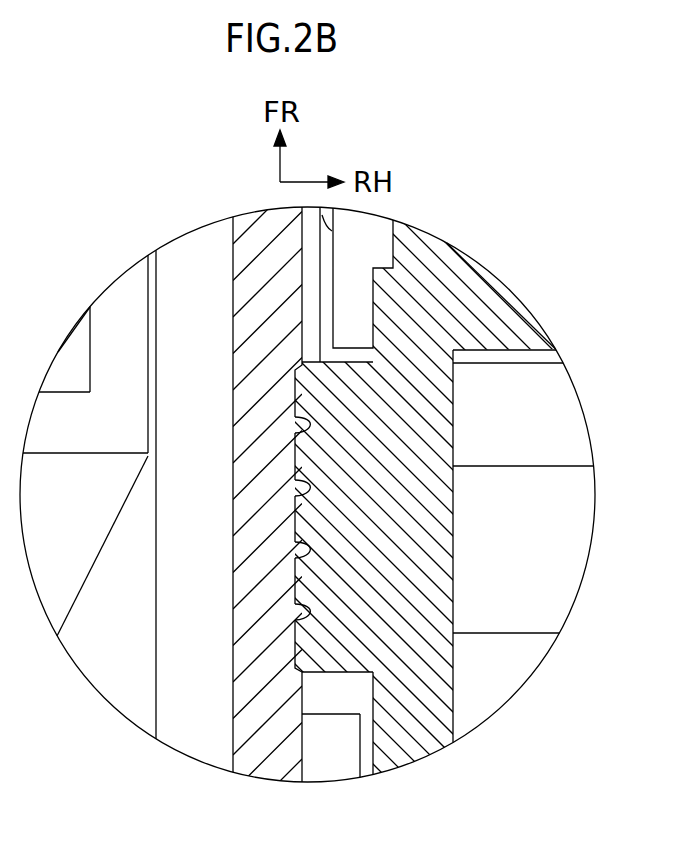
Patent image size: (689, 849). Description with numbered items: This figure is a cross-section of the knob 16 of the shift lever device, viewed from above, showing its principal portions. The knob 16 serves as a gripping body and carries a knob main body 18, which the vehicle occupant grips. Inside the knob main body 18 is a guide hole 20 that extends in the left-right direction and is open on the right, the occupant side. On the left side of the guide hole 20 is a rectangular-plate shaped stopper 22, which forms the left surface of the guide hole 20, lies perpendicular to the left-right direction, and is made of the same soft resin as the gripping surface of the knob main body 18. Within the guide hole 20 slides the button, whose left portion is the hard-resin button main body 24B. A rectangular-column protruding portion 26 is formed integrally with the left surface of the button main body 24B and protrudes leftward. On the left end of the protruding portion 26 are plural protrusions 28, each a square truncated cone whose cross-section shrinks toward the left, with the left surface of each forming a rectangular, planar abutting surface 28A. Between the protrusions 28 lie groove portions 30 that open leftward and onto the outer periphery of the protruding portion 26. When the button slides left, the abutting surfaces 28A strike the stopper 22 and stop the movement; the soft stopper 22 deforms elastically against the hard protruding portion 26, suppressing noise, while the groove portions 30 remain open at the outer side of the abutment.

The knob 16 is at (183, 231).
The knob main body 18 is at (165, 696).
The guide hole 20 is at (373, 231).
The stopper 22 is at (233, 292).
The button main body 24B is at (517, 238).
The protruding portion 26 is at (337, 680).
The protrusions 28 is at (295, 399).
The abutting surface 28A is at (295, 460).
The groove portions 30 is at (306, 426).